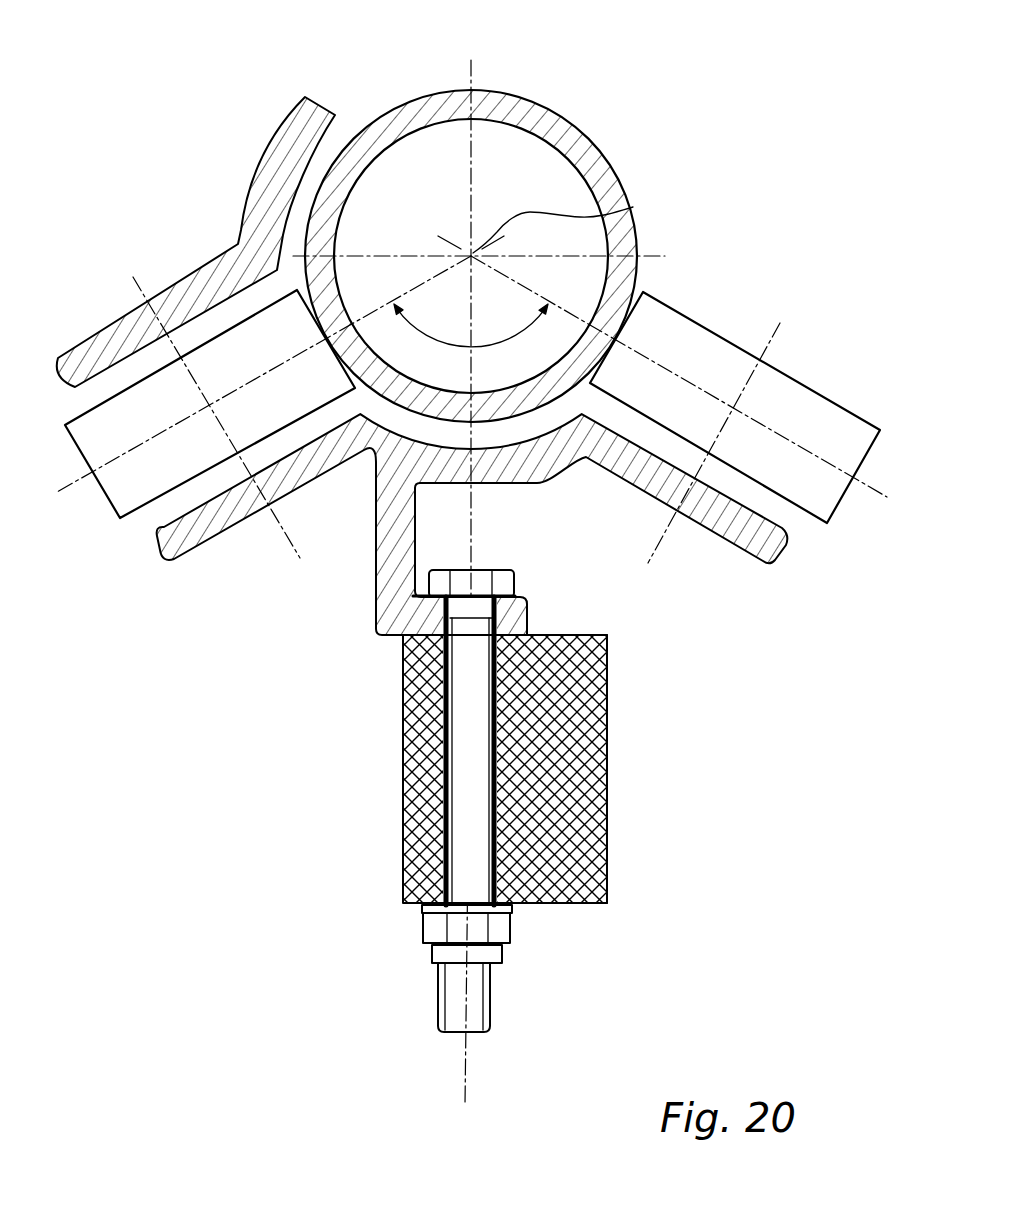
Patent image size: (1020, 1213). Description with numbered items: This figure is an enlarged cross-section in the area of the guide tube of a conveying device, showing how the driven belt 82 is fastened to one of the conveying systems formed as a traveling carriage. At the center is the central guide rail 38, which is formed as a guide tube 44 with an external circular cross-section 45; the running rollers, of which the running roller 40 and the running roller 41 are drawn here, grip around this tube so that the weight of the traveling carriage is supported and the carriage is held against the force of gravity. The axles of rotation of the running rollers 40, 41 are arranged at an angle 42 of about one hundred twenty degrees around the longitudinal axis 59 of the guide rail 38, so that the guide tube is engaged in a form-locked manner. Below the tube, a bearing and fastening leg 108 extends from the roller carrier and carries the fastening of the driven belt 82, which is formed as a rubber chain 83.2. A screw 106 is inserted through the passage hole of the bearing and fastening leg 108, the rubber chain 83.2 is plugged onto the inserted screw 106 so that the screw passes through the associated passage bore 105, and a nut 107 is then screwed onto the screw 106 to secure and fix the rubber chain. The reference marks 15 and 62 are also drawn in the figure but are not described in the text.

The tube frame assembly 15 is at (230, 148).
The central guide rail 38 is at (489, 217).
The running roller 40 is at (116, 488).
The running roller 41 is at (835, 408).
The angle 42 is at (500, 344).
The guide tube 44 is at (533, 118).
The external circular cross-section 45 is at (423, 77).
The longitudinal axis 59 is at (633, 207).
The tube axis 62 is at (137, 277).
The driven belt 82 is at (575, 769).
The rubber chain 83.2 is at (616, 705).
The passage bore 105 is at (430, 809).
The screw 106 is at (458, 728).
The nut 107 is at (427, 920).
The bearing and fastening leg 108 is at (547, 503).